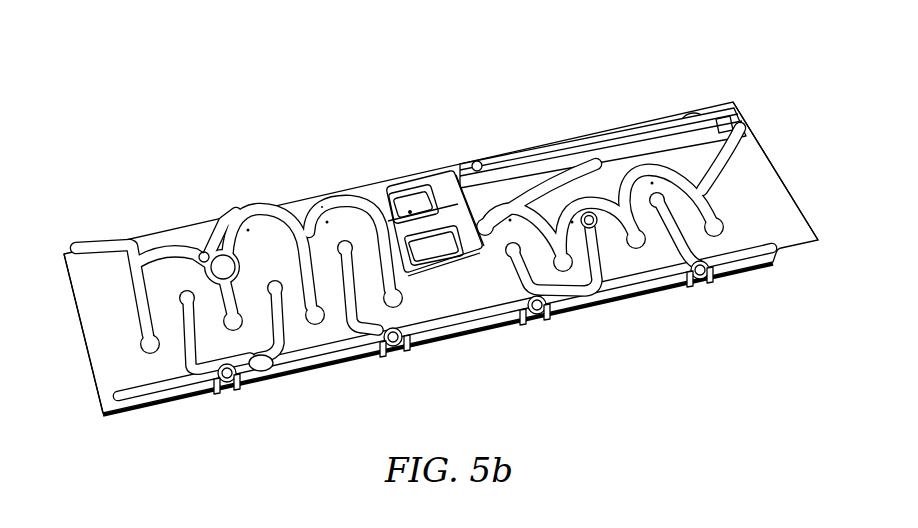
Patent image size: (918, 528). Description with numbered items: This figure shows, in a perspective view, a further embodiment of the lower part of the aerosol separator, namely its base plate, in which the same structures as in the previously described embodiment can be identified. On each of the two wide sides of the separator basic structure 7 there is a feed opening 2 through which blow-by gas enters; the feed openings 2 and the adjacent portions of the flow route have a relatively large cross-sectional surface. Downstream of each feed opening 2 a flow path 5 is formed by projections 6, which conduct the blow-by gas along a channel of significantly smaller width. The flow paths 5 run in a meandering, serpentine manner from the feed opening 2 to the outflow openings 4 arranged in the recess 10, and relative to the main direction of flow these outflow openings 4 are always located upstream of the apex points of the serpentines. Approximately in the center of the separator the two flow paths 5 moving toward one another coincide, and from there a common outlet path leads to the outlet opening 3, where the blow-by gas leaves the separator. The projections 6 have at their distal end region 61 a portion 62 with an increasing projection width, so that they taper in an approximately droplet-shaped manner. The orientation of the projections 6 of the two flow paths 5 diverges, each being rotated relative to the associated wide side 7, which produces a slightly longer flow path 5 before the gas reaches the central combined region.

The feed opening 2 is at (113, 332).
The outlet opening 3 is at (696, 130).
The outflow opening 4 is at (413, 210).
The flow path 5 is at (240, 401).
The projection 6 is at (356, 292).
The separator basic structure / wide side 7 is at (78, 318).
The recess 10 is at (434, 256).
The distal end region 61 is at (257, 285).
The portion with increasing projection width 62 is at (326, 208).